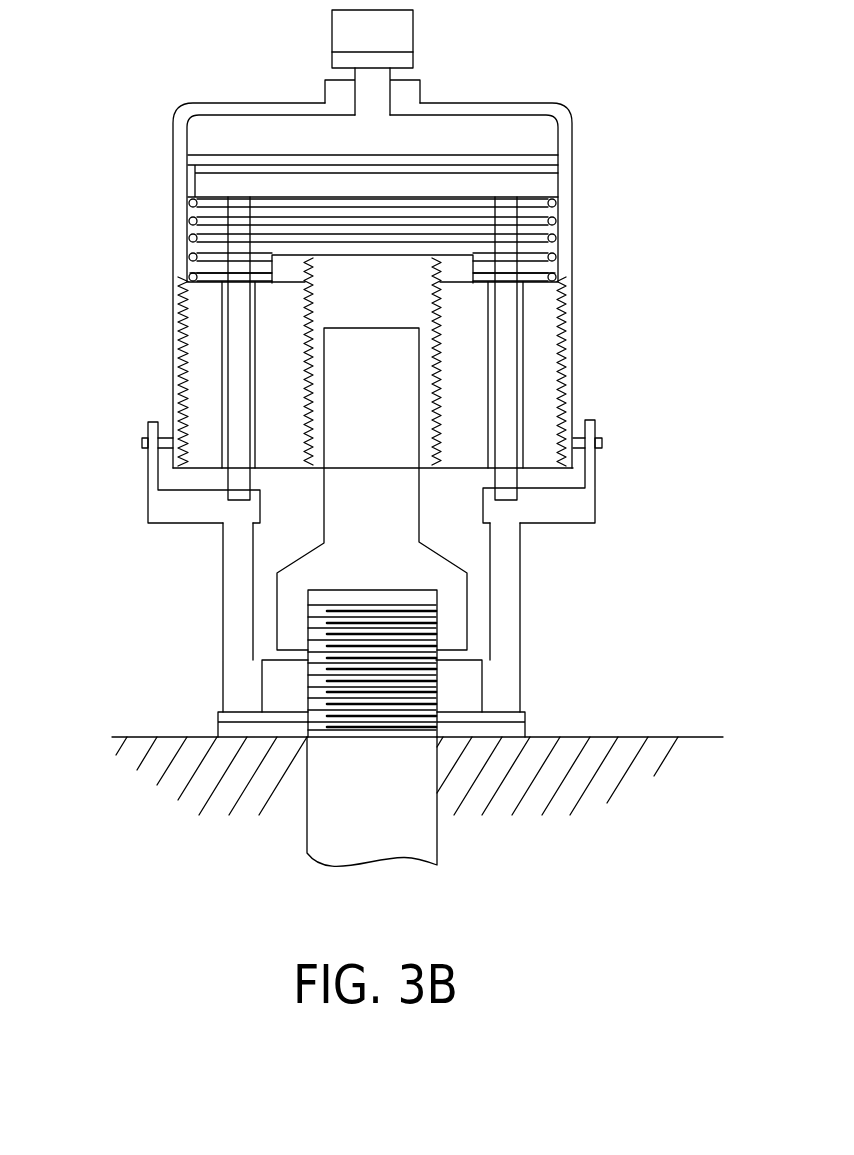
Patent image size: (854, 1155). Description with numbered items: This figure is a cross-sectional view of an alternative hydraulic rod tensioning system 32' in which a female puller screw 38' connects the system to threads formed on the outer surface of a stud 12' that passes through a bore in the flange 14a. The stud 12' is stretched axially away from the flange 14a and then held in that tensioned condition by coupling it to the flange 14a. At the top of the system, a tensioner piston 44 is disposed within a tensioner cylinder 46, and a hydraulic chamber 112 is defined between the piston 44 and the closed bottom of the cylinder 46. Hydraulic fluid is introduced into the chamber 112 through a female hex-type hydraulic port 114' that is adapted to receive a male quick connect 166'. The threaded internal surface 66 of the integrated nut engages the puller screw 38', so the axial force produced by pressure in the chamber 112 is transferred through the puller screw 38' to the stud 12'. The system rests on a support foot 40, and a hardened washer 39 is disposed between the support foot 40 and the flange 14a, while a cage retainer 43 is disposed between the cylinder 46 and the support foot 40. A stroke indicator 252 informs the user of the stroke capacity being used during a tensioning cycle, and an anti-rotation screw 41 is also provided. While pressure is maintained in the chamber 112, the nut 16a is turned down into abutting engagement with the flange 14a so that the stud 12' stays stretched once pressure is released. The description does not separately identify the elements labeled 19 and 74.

The hydraulic rod tensioning system 32' is at (62, 34).
The male quick connect 166' is at (411, 39).
The female hex-type hydraulic port 114' is at (421, 88).
The tensioner cylinder 46 is at (558, 102).
The hydraulic chamber 112 is at (548, 162).
The tensioner piston 44 is at (547, 182).
The spring stack 19 is at (557, 202).
The internal surface 66 is at (307, 347).
The female puller screw 38' is at (456, 489).
The bolt 74 is at (515, 478).
The anti-rotation screw 41 is at (142, 442).
The stroke indicator 252 is at (143, 430).
The cage retainer 43 is at (597, 440).
The nut 16a is at (268, 673).
The support foot 40 is at (508, 668).
The hardened washer 39 is at (230, 728).
The stud 12' is at (421, 731).
The flange 14a is at (640, 747).